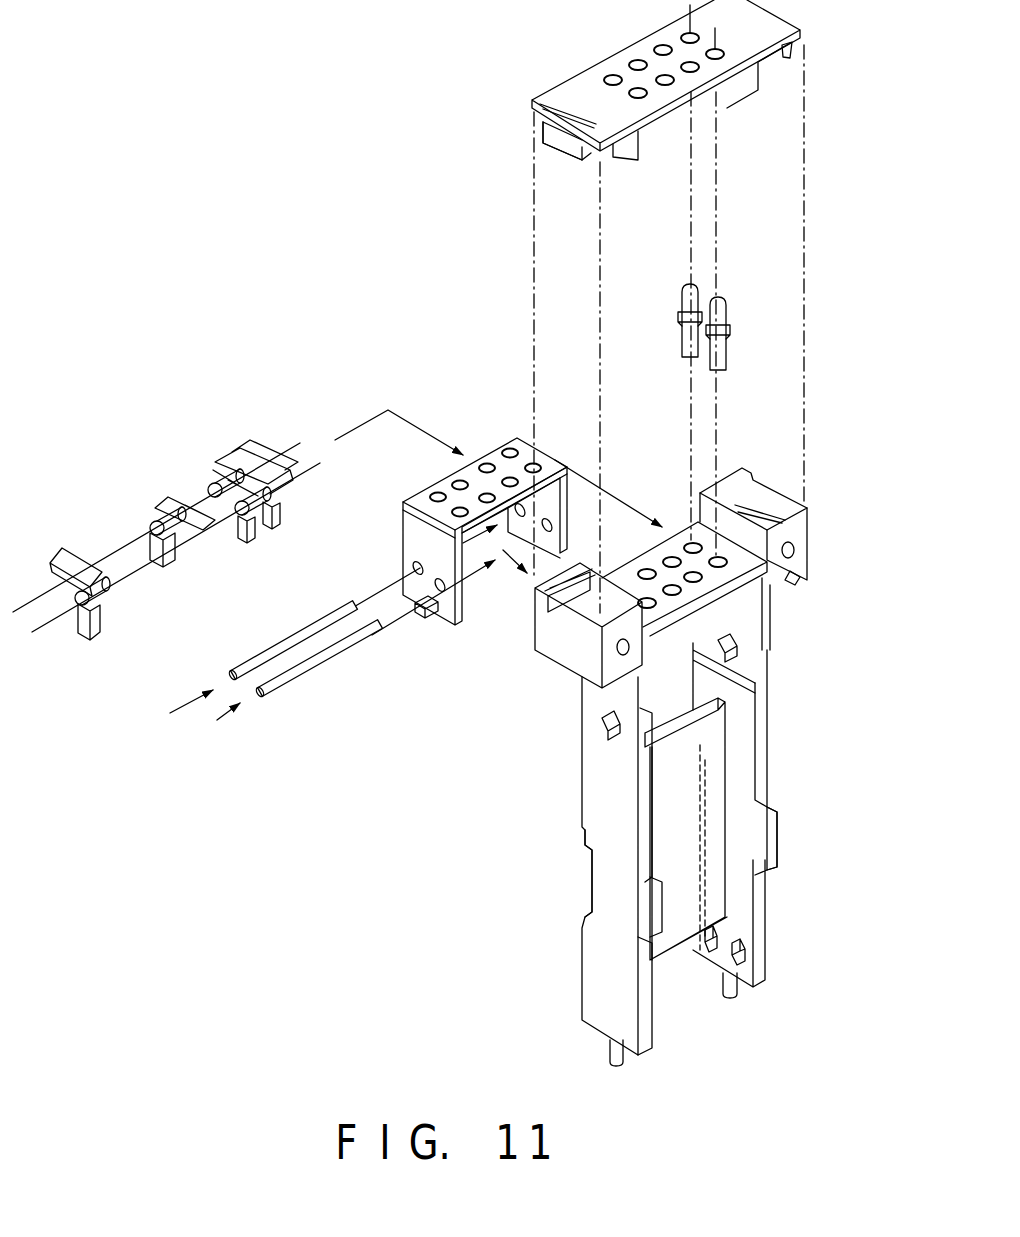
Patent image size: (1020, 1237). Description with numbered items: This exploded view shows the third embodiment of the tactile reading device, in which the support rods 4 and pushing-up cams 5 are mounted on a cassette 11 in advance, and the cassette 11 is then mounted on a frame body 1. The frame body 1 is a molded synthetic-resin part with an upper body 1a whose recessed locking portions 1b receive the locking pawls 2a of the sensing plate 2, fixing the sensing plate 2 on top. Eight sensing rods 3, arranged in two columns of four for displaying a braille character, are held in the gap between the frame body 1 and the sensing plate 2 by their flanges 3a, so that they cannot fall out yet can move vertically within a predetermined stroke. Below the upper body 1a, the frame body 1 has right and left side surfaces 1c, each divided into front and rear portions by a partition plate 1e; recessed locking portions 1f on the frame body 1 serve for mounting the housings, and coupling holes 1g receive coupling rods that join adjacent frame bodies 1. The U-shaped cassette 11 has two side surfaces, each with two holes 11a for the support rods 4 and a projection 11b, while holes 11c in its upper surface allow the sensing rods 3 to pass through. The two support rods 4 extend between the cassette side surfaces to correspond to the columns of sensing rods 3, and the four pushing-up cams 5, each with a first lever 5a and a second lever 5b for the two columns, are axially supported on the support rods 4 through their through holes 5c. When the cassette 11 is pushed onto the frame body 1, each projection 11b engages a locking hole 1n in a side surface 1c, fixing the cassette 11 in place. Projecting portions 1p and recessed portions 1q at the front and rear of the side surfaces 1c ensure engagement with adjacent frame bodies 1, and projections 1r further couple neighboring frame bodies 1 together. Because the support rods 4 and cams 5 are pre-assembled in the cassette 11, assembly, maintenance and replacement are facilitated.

The frame body 1 is at (646, 762).
The upper body 1a is at (738, 590).
The recessed locking portions 1b is at (777, 498).
The side surfaces 1c is at (768, 920).
The partition plate 1e is at (685, 940).
The recessed locking portions 1f is at (757, 955).
The coupling holes 1g is at (794, 552).
The locking hole 1n is at (740, 658).
The projecting portions 1p is at (777, 827).
The recessed portions 1q is at (593, 883).
The projections 1r is at (790, 584).
The sensing plate 2 is at (572, 88).
The locking pawls 2a is at (534, 133).
The sensing rods 3 is at (725, 312).
The flanges 3a is at (730, 331).
The support rods 4 is at (290, 633).
The pushing-up cams 5 is at (166, 545).
The first lever 5a is at (103, 622).
The second lever 5b is at (72, 548).
The through holes 5c is at (72, 625).
The cassette 11 is at (497, 540).
The holes 11a is at (462, 623).
The projection 11b is at (425, 620).
The holes 11c is at (516, 452).